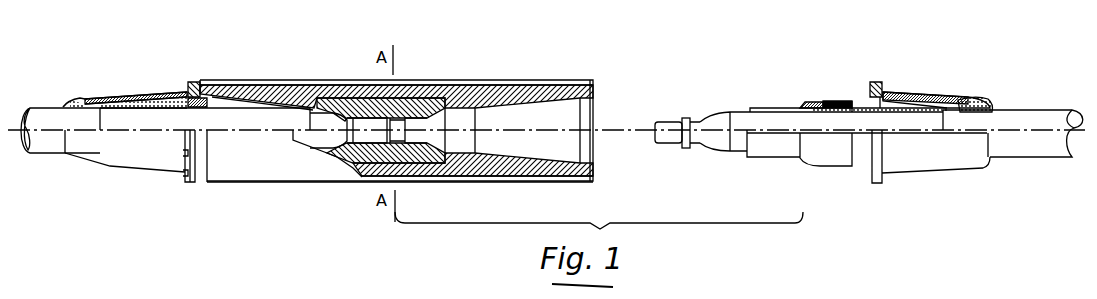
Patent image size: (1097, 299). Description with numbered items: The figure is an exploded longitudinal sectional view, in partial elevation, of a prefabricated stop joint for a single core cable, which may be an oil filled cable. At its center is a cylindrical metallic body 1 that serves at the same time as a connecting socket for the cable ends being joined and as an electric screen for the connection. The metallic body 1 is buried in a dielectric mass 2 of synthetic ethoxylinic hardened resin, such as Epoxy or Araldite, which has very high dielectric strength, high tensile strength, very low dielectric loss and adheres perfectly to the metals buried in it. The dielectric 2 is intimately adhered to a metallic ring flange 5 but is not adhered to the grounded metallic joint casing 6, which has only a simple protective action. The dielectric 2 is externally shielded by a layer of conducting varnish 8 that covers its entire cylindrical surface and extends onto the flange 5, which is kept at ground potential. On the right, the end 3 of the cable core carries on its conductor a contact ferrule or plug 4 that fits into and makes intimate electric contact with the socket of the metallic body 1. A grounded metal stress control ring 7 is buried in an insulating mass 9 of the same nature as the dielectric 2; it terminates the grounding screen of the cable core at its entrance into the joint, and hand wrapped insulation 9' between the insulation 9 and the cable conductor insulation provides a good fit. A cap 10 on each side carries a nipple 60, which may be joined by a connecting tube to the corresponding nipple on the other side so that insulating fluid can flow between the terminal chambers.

The cylindrical metallic body 1 is at (417, 108).
The dielectric mass 2 is at (518, 85).
The cable core end 3 is at (737, 145).
The contact ferrule or plug 4 is at (667, 142).
The metallic ring flange 5 is at (188, 82).
The joint casing 6 is at (250, 80).
The stress control ring 7 is at (837, 100).
The layer of conducting varnish 8 is at (287, 87).
The insulating mass 9 is at (809, 83).
The hand wrapped insulation 9' is at (801, 90).
The cap 10 is at (132, 92).
The nipple 60 is at (165, 92).